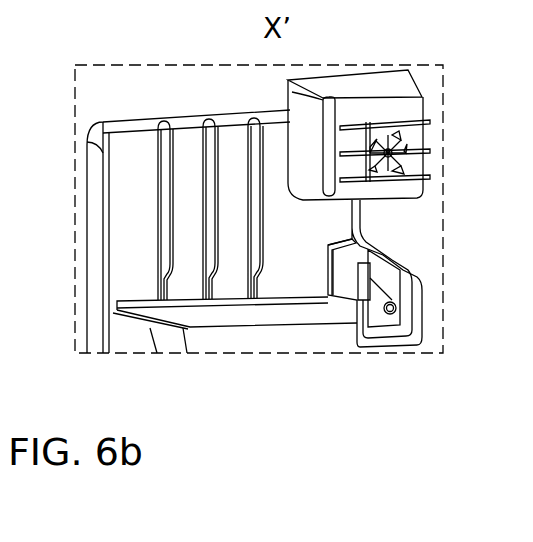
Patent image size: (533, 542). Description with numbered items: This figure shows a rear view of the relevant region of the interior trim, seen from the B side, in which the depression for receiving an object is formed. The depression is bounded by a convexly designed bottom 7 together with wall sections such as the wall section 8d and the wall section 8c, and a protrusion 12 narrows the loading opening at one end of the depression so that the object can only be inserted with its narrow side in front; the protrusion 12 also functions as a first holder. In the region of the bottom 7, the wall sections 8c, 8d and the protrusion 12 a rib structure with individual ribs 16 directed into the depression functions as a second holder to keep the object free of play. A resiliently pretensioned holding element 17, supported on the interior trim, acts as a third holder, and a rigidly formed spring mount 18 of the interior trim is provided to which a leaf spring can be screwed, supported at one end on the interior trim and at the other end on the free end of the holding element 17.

The wall section 8d is at (127, 340).
The rib 16 is at (163, 260).
The protrusion 12 is at (275, 280).
The bottom 7 is at (238, 340).
The spring mount 18 is at (408, 147).
The wall section 8c is at (430, 252).
The holding element 17 is at (382, 330).